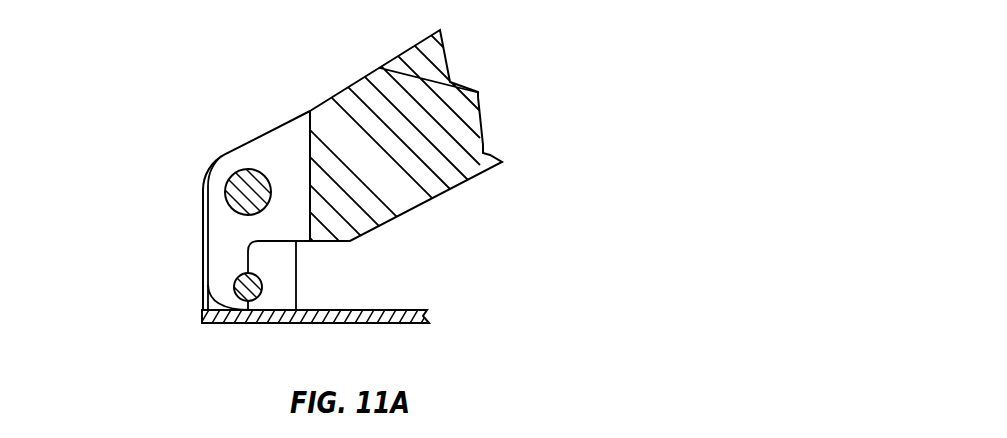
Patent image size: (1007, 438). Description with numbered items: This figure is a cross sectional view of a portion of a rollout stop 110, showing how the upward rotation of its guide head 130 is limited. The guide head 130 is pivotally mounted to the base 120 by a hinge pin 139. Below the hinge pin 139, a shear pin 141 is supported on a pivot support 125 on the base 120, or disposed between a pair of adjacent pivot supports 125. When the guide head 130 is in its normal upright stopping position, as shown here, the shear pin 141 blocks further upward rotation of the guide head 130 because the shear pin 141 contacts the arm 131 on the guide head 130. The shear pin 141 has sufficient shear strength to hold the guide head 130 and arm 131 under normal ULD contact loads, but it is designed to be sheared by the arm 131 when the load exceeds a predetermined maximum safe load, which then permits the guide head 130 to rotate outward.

The rollout stop 110 is at (535, 72).
The base 120 is at (402, 310).
The pivot support 125 is at (297, 270).
The guide head 130 is at (387, 65).
The arm 131 is at (217, 258).
The hinge pin 139 is at (227, 193).
The shear pin 141 is at (238, 277).